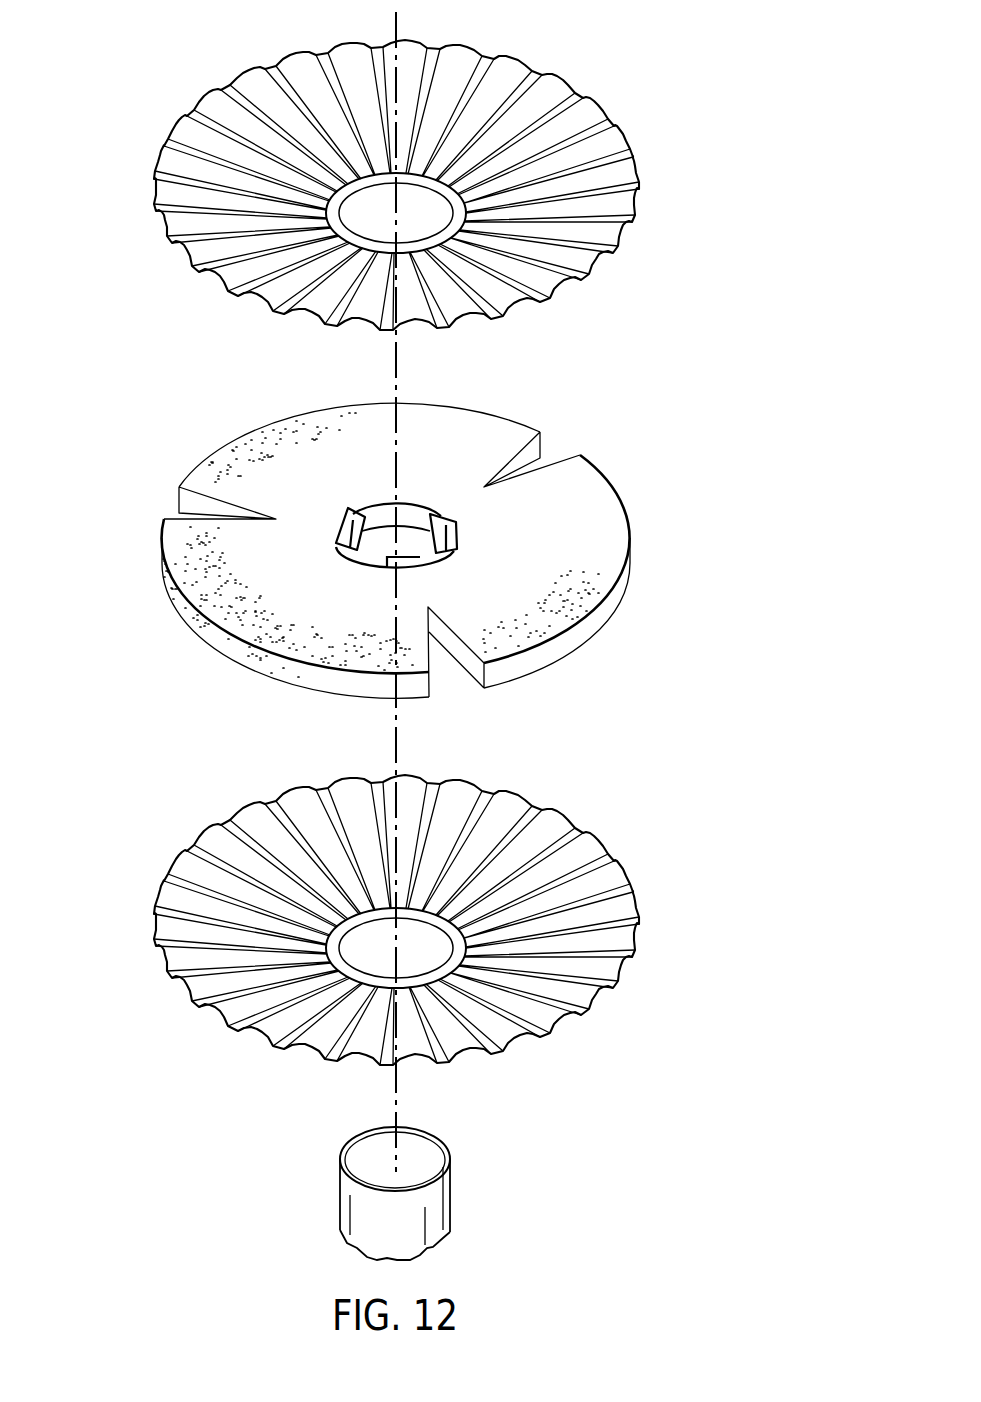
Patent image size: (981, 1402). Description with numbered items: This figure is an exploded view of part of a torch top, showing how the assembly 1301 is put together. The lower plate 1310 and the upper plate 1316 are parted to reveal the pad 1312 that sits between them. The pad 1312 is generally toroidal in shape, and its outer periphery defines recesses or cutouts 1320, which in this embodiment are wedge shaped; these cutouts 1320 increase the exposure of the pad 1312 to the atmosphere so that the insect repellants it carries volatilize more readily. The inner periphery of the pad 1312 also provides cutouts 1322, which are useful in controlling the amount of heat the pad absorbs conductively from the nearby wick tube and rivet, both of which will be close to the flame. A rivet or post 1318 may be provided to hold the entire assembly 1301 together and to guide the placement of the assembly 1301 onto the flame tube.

The assembly 1301 is at (181, 52).
The upper plate 1316 is at (590, 110).
The pad 1312 is at (605, 494).
The cutouts 1320 is at (552, 444).
The cutouts 1322 is at (364, 550).
The lower plate 1310 is at (590, 845).
The rivet or post 1318 is at (450, 1190).